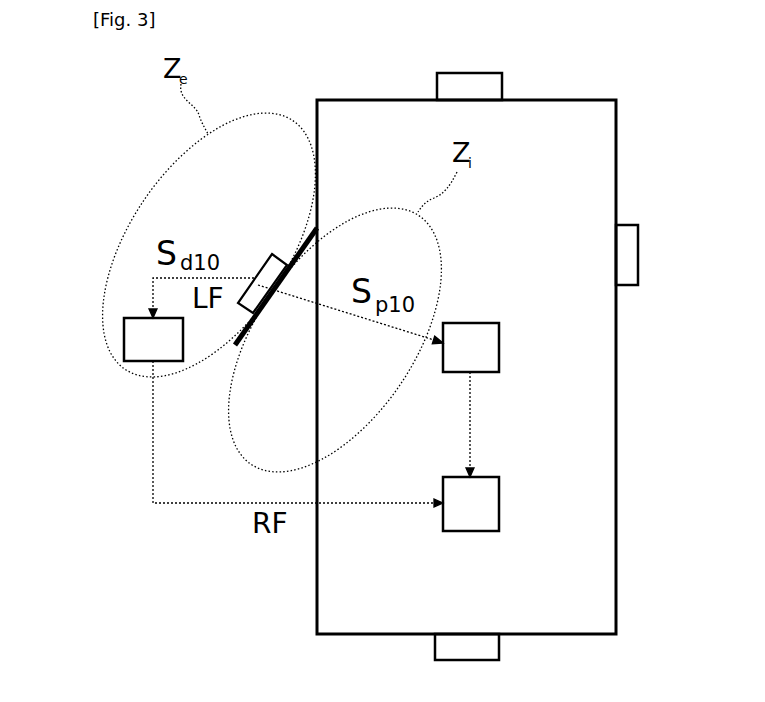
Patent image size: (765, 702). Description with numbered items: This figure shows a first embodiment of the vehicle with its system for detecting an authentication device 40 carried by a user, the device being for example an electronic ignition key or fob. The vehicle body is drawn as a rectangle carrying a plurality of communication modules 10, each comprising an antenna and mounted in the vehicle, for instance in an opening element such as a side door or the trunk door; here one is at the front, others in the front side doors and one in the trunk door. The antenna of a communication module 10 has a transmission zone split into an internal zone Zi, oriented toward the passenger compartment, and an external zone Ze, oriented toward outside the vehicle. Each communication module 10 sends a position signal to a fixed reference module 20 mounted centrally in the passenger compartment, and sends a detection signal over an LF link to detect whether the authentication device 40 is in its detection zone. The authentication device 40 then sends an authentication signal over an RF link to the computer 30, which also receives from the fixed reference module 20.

The communication module 10 is at (492, 82).
The fixed reference module 20 is at (471, 347).
The computer 30 is at (471, 504).
The authentication device 40 is at (153, 339).